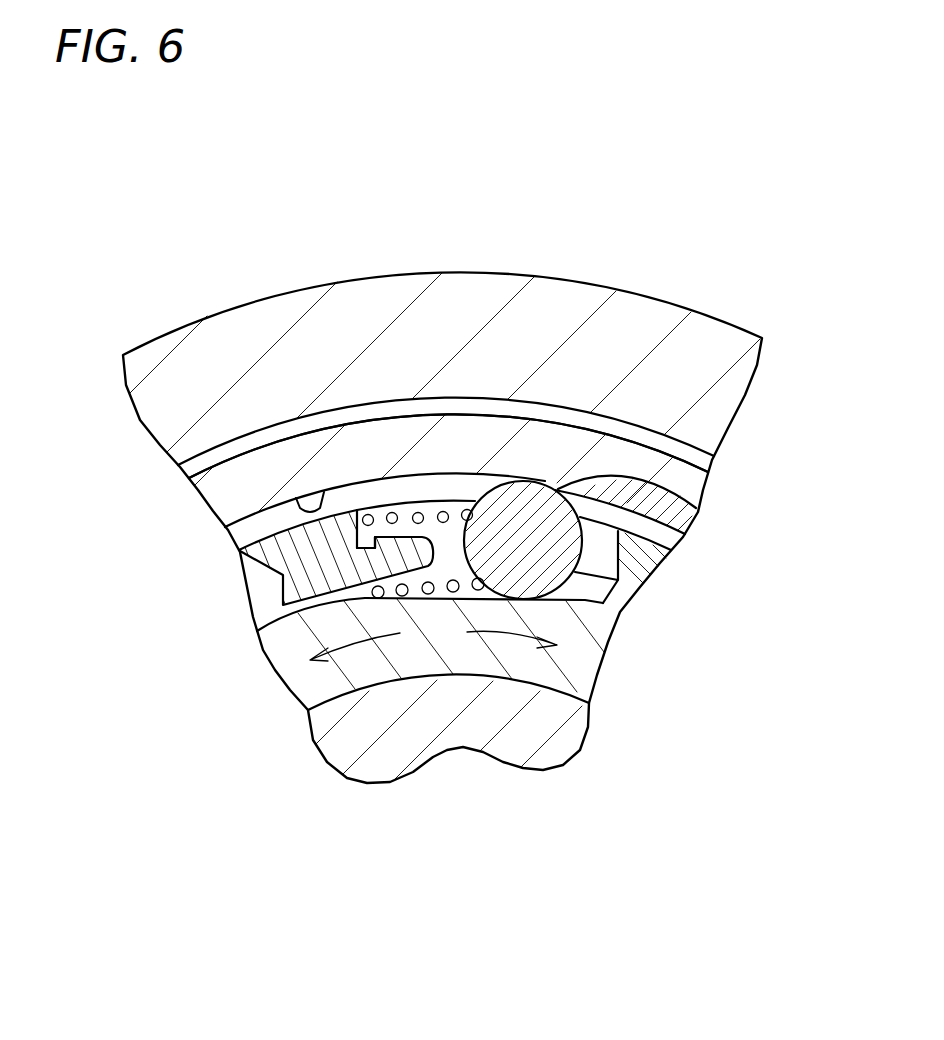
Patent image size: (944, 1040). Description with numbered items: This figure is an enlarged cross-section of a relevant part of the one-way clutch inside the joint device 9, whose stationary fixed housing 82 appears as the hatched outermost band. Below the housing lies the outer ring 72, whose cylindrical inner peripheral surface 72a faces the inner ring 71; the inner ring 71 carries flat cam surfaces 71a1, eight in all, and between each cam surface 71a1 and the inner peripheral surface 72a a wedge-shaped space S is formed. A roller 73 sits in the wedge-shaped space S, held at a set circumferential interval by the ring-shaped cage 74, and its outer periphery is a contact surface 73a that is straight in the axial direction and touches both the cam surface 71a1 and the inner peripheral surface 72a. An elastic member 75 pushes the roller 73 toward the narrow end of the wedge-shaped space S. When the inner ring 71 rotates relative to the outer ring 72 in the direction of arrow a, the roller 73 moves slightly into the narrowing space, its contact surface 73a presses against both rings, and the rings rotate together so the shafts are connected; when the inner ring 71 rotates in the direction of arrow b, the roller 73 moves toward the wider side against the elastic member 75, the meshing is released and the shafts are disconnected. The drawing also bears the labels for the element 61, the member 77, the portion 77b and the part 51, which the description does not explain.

The joint device 9 is at (598, 270).
The fixed housing 82 is at (492, 300).
The outer ring 72 is at (360, 470).
The stator 61 is at (253, 470).
The inner peripheral surface of the outer ring 72a is at (297, 498).
The wedge-shaped space S is at (279, 507).
The bearing holder member 77 is at (447, 563).
The ring-shaped cage 74 is at (620, 520).
The engagement portion of holder 77b is at (408, 517).
The elastic member 75 is at (445, 511).
The roller 73 is at (627, 597).
The contact surface 73a is at (697, 511).
The inner ring 71 is at (468, 740).
The cam surface 71a1 is at (450, 600).
The arrow a is at (352, 602).
The arrow b is at (497, 600).
The rotor shaft flange 51 is at (567, 742).